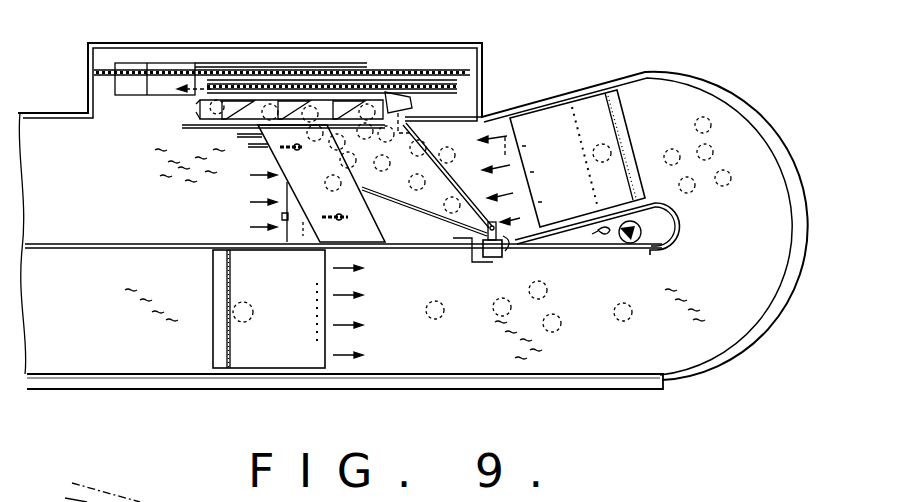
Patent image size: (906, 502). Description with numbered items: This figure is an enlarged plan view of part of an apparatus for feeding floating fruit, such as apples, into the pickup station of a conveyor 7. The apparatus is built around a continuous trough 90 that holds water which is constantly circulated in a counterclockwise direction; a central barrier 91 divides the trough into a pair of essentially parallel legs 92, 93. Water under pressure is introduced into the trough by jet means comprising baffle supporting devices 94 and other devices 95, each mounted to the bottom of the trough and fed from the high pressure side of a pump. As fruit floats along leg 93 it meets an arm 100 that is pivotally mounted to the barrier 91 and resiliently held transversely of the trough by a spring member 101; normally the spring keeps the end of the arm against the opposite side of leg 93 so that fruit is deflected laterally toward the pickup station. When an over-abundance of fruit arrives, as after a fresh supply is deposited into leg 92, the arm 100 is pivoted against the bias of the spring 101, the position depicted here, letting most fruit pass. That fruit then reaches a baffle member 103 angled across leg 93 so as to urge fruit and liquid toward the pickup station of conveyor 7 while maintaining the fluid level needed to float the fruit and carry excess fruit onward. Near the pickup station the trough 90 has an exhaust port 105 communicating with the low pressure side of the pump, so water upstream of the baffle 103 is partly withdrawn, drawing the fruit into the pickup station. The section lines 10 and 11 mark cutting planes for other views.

The conveyor 7 is at (253, 78).
The section line 10- 10 is at (13, 238).
The section line 11- 11 is at (446, 447).
The continuous trough 90 is at (53, 104).
The central barrier 91 is at (123, 244).
The leg 92 is at (100, 323).
The leg 93 is at (103, 191).
The baffle supporting device 94 is at (287, 208).
The jet device 95 is at (582, 103).
The arm 100 is at (428, 211).
The spring member 101 is at (517, 256).
The baffle member 103 is at (367, 234).
The exhaust port 105 is at (163, 68).